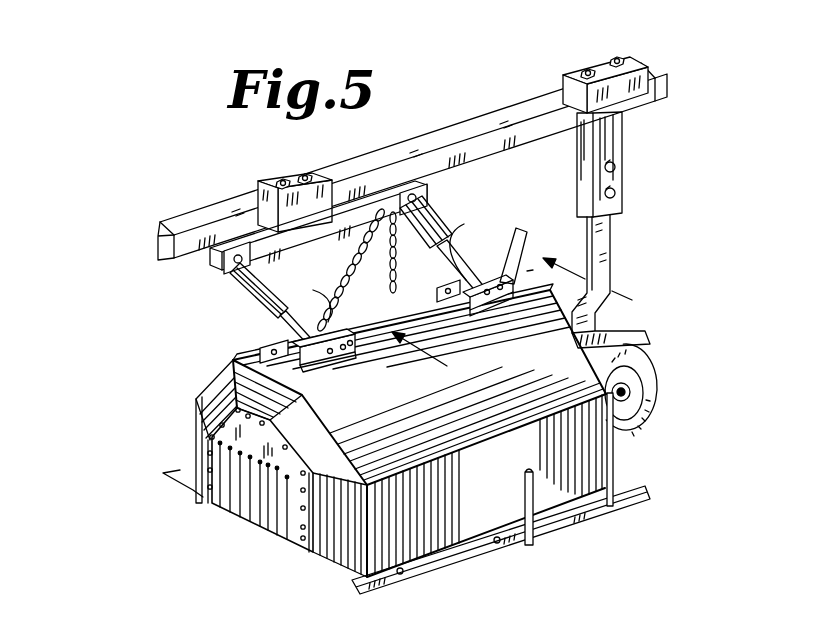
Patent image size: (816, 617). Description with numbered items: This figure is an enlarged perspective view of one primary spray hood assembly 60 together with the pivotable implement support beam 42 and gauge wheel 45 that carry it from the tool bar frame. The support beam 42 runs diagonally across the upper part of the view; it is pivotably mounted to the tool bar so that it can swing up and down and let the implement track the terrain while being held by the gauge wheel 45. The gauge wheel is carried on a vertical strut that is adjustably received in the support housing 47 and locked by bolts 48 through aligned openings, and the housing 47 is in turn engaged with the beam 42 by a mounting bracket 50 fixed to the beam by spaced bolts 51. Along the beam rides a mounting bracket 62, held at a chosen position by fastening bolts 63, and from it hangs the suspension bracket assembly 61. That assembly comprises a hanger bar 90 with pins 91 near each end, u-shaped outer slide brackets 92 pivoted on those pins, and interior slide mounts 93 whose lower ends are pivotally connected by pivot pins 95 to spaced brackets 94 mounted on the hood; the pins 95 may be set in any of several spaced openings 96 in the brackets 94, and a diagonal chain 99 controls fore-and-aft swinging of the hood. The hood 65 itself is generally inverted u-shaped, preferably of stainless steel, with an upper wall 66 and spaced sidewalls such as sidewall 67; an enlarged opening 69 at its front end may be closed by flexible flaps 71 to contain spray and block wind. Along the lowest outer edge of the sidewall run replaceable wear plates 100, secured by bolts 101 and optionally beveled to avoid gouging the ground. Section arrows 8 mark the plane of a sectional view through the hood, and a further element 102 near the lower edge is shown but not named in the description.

The section line 8- 8 is at (528, 324).
The implement support beam 42 is at (470, 122).
The gauge wheel 45 is at (652, 363).
The support housing 47 is at (620, 128).
The bolts 48 is at (618, 189).
The mounting bracket 50 is at (620, 66).
The spaced bolts 51 is at (587, 70).
The primary spray hood assembly 60 is at (396, 436).
The suspension bracket assembly 61 is at (257, 318).
The mounting bracket 62 is at (262, 197).
The fastening bolts 63 is at (298, 177).
The hood 65 is at (190, 392).
The upper wall 66 is at (377, 296).
The sidewall 67 is at (195, 447).
The enlarged opening 69 is at (200, 505).
The flexible flaps 71 is at (257, 513).
The hanger bar 90 is at (368, 190).
The pins 91 is at (213, 275).
The outer slide brackets 92 is at (262, 292).
The interior slide mounts 93 is at (391, 264).
The spaced brackets 94 is at (328, 368).
The pivot pins 95 is at (257, 349).
The spaced openings 96 is at (612, 235).
The chain 99 is at (360, 243).
The replaceable wear plates 100 is at (540, 540).
The bolts 101 is at (583, 510).
The guide post 102 is at (525, 492).